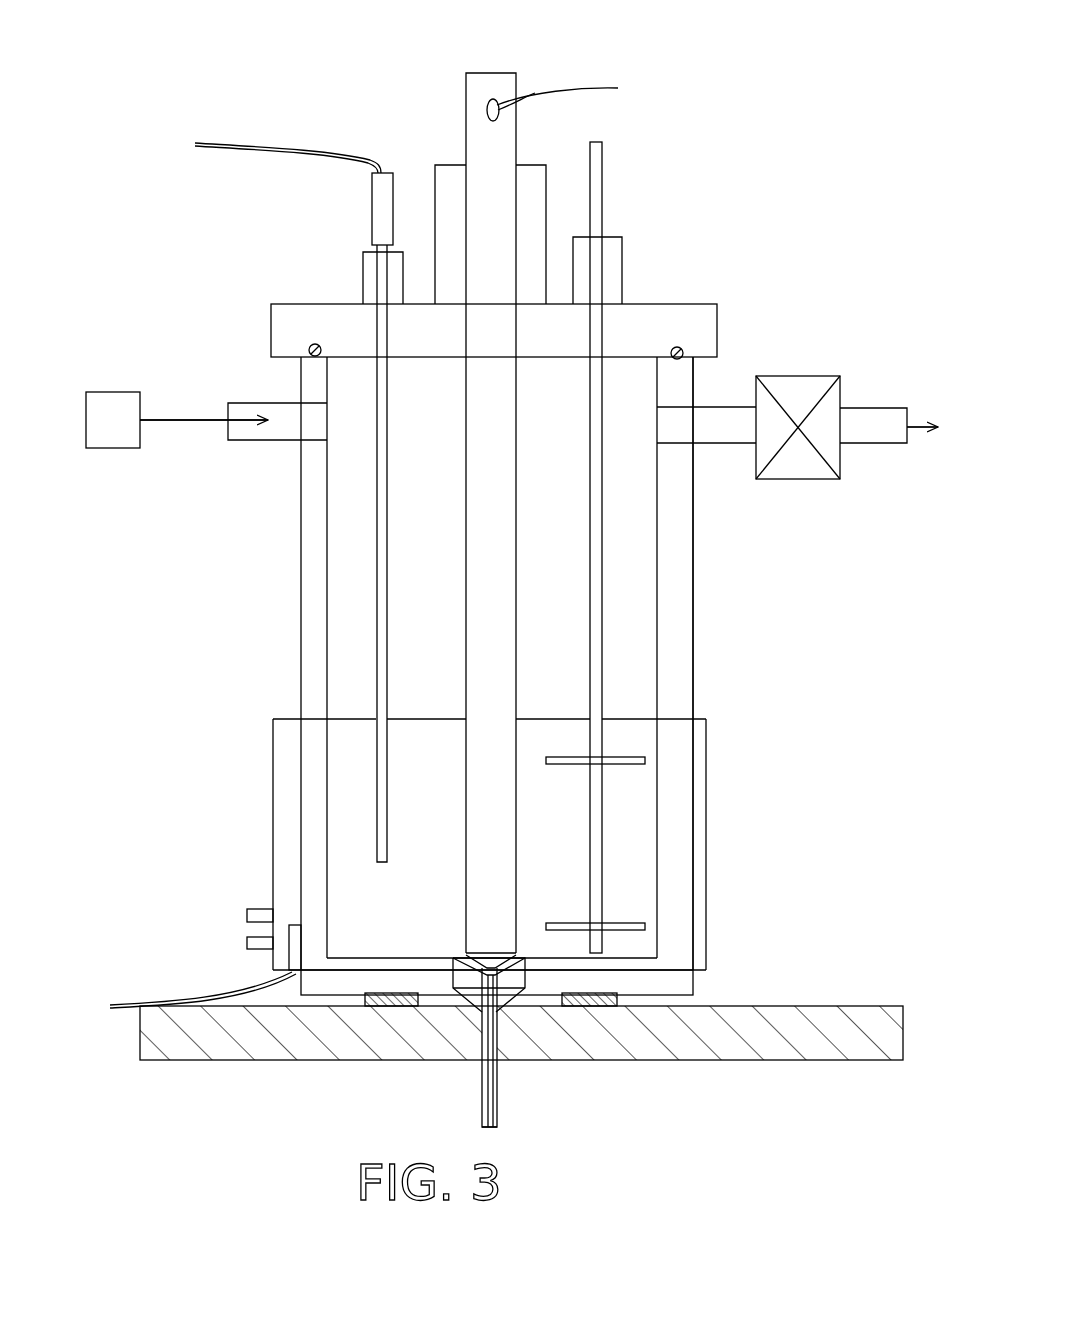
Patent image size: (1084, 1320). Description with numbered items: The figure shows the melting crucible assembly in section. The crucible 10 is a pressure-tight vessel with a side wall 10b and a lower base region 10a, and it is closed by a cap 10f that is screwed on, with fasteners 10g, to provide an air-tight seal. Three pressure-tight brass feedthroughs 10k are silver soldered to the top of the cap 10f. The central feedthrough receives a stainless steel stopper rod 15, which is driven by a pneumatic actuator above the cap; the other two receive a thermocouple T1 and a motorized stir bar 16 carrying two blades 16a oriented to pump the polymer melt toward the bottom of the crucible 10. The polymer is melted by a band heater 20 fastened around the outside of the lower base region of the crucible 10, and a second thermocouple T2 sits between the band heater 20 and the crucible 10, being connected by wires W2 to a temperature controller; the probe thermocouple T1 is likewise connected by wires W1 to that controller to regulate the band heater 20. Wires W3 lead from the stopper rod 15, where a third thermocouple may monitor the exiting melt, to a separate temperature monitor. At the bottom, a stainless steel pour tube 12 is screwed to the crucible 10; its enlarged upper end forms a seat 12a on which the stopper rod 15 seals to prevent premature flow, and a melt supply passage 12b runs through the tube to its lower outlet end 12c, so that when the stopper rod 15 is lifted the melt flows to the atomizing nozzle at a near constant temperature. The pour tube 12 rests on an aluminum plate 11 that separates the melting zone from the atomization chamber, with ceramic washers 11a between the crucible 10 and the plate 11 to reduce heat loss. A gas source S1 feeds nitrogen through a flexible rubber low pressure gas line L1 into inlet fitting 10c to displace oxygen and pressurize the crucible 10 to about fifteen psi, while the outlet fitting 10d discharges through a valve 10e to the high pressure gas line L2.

The crucible 10 is at (297, 622).
The bottom plate of vessel 10a is at (680, 985).
The side wall of vessel 10b is at (693, 690).
The fitting 10c is at (240, 403).
The fitting 10d is at (717, 405).
The outlet valve 10e is at (825, 376).
The cap 10f is at (277, 320).
The fastening screw 10g is at (310, 350).
The pressure-tight brass feedthroughs 10k is at (363, 266).
The aluminum plate 11 is at (892, 1045).
The ceramic washers 11a is at (378, 1006).
The pour tube 12 is at (480, 1070).
The seat 12a is at (450, 972).
The melt supply passage 12b is at (488, 1102).
The tube outlet end 12c is at (485, 1127).
The stopper rod 15 is at (466, 103).
The motorized stir bar 16 is at (603, 177).
The blades 16a is at (560, 768).
The band heater 20 is at (283, 750).
The thermocouple T1 is at (387, 568).
The thermocouple T2 is at (290, 952).
The source S1 is at (130, 362).
The flexible rubber low pressure gas line L1 is at (187, 422).
The high pressure stainless steel gas line L2 is at (877, 443).
The wires W1 is at (240, 143).
The wires W2 is at (182, 1000).
The wires W3 is at (605, 85).